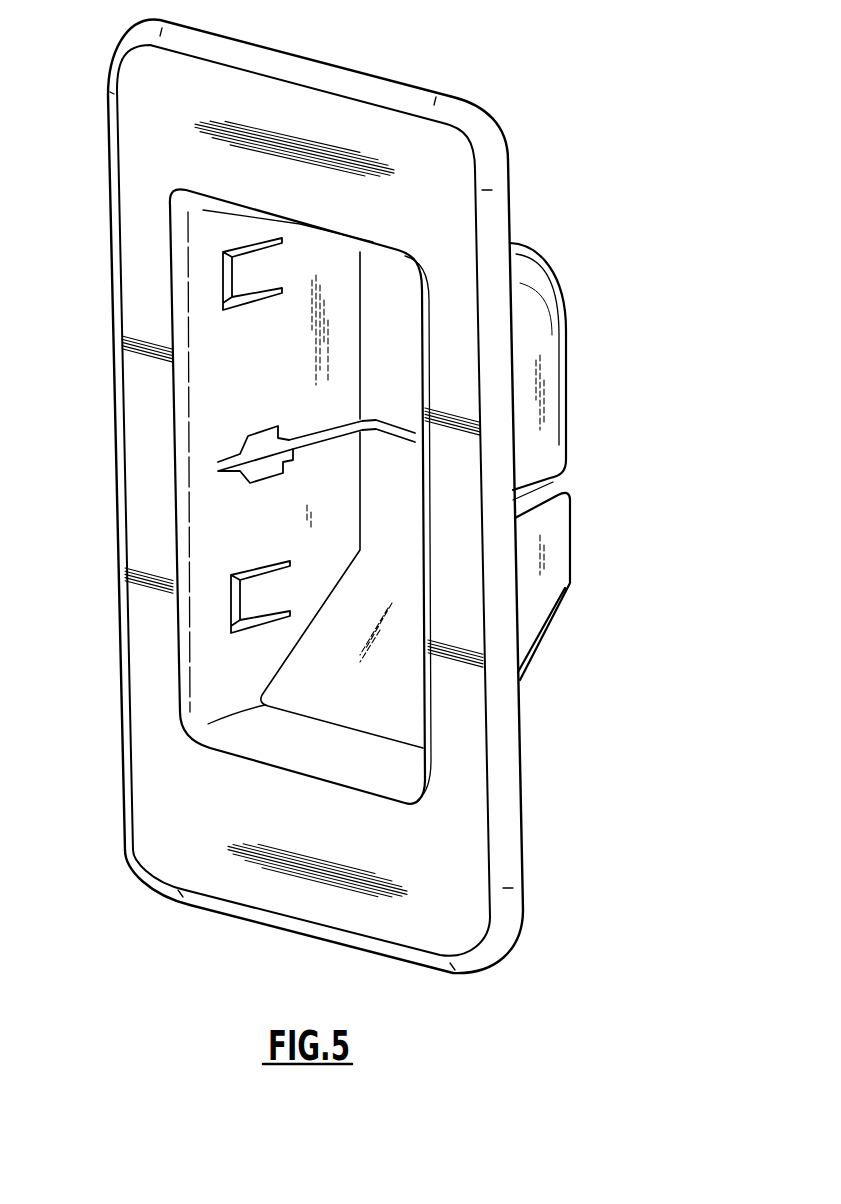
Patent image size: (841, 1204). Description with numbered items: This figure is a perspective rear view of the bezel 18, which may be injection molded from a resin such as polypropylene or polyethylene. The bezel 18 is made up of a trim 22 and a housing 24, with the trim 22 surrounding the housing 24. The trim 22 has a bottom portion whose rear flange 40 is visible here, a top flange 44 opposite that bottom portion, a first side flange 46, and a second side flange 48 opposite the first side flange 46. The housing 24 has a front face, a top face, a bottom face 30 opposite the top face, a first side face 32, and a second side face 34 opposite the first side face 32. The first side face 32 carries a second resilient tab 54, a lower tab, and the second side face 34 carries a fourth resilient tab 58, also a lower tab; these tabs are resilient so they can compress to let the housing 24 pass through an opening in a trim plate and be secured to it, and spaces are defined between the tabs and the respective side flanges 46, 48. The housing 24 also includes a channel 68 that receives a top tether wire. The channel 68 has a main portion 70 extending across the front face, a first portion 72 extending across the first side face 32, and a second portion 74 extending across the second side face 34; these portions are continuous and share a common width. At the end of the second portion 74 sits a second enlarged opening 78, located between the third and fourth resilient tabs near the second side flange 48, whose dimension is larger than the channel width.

The bezel 18 is at (598, 68).
The trim 22 is at (443, 153).
The housing 24 is at (535, 330).
The bottom face 30 is at (385, 678).
The first side face 32 is at (548, 402).
The second side face 34 is at (232, 372).
The rear flange 40 is at (267, 887).
The top flange 44 is at (316, 110).
The first side flange 46 is at (498, 752).
The second side flange 48 is at (122, 528).
The second resilient tab 54 is at (247, 278).
The fourth resilient tab 58 is at (253, 598).
The channel 68 is at (329, 419).
The main portion 70 is at (400, 423).
The first portion 72 is at (525, 492).
The second portion 74 is at (276, 416).
The second enlarged opening 78 is at (258, 465).